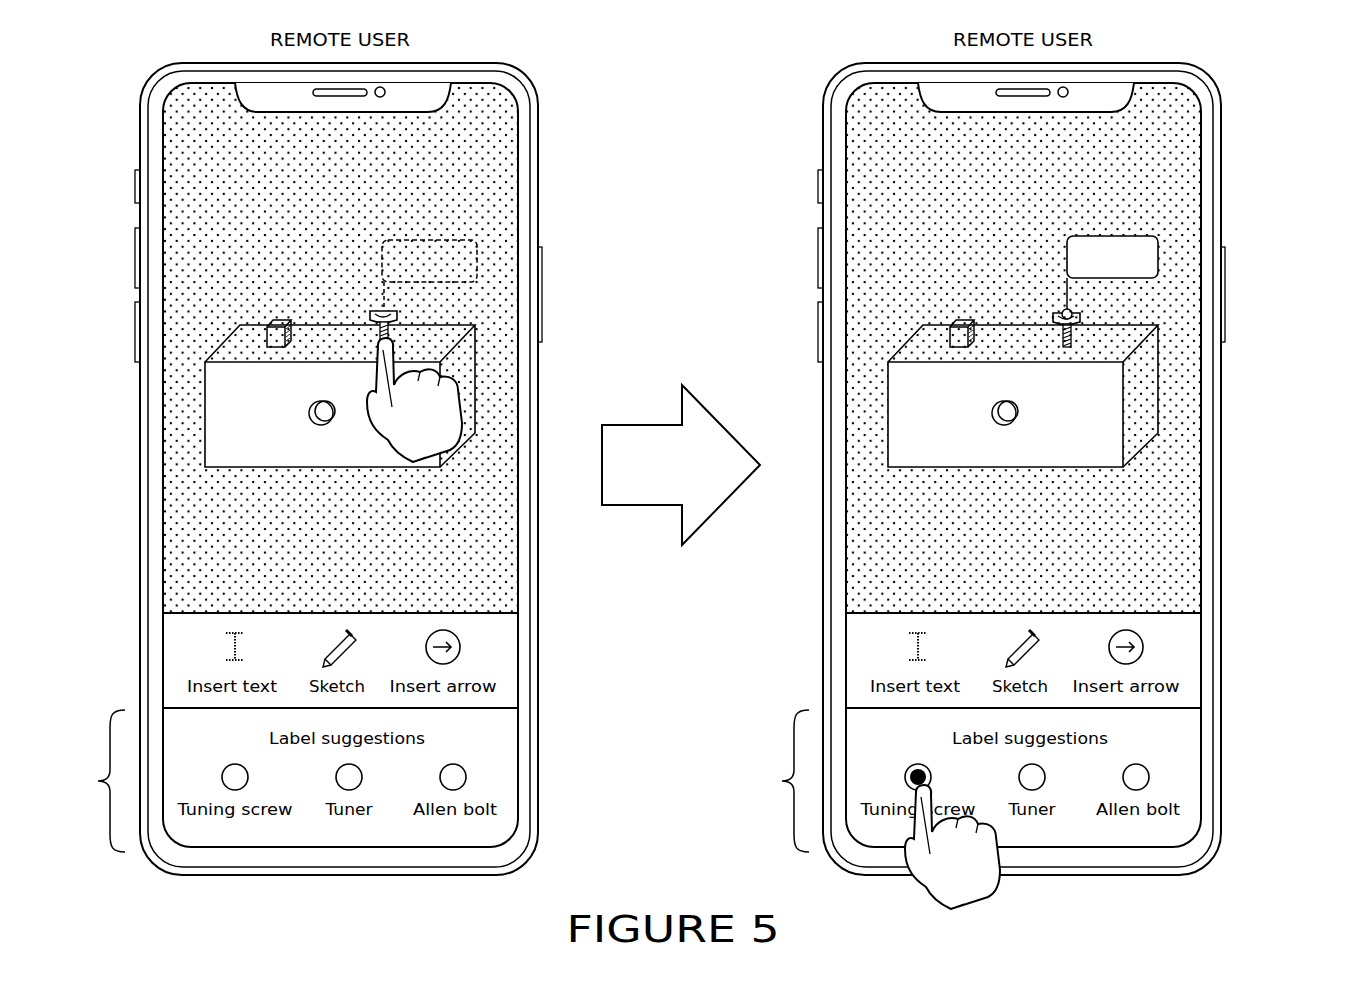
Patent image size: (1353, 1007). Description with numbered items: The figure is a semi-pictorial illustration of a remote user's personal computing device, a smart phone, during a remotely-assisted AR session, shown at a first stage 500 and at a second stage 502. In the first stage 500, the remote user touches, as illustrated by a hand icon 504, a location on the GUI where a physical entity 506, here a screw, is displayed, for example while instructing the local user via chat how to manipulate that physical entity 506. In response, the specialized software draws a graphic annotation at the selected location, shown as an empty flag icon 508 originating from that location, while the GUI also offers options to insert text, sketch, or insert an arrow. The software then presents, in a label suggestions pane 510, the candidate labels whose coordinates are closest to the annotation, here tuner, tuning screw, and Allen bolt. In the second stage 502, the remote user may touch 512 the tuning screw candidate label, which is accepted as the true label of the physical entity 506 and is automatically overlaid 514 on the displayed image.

The first stage 500 is at (537, 73).
The second stage 502 is at (1225, 75).
The hand icon 504 is at (440, 426).
The physical entity 506 is at (368, 308).
The empty flag icon 508 is at (460, 230).
The label suggestions pane 510 is at (424, 781).
The touch 512 is at (958, 873).
The overlaid label 514 is at (1159, 230).